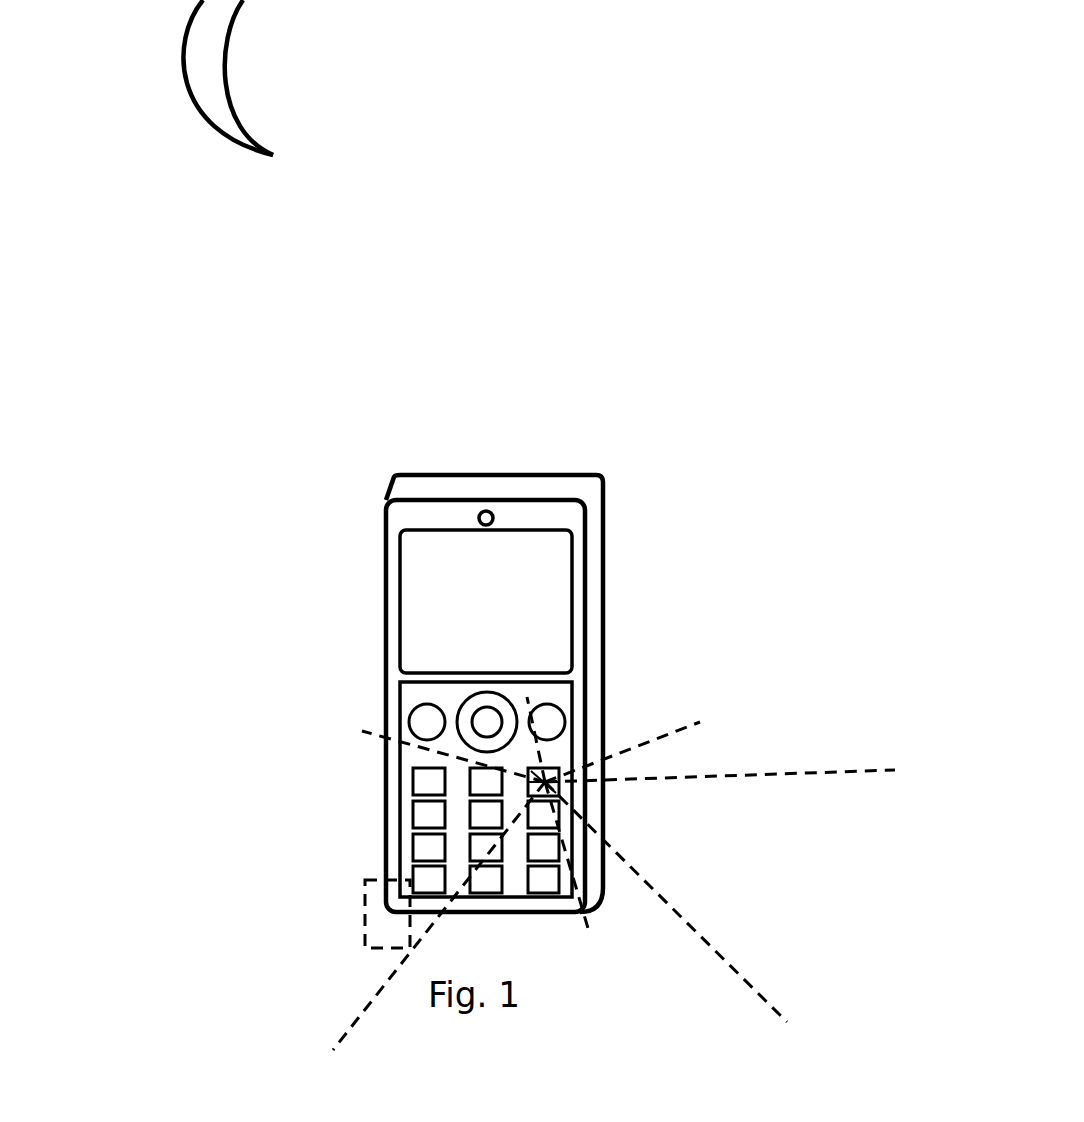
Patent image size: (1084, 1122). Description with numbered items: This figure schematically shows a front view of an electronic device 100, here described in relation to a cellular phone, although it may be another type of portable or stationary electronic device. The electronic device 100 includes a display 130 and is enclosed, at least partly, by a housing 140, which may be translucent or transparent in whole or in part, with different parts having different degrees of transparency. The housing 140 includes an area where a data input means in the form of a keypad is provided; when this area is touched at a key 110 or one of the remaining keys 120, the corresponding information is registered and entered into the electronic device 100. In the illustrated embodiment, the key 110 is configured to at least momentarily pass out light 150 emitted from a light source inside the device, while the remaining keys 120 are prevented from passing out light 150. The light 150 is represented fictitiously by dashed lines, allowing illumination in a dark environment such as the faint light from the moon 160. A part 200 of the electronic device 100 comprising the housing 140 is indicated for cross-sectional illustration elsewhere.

The electronic device 100 is at (730, 386).
The key 110 is at (543, 768).
The remaining keys 120 is at (425, 805).
The display 130 is at (536, 572).
The housing 140 is at (428, 520).
The light 150 is at (709, 943).
The moon 160 is at (202, 75).
The part of electronic device 200 is at (364, 925).